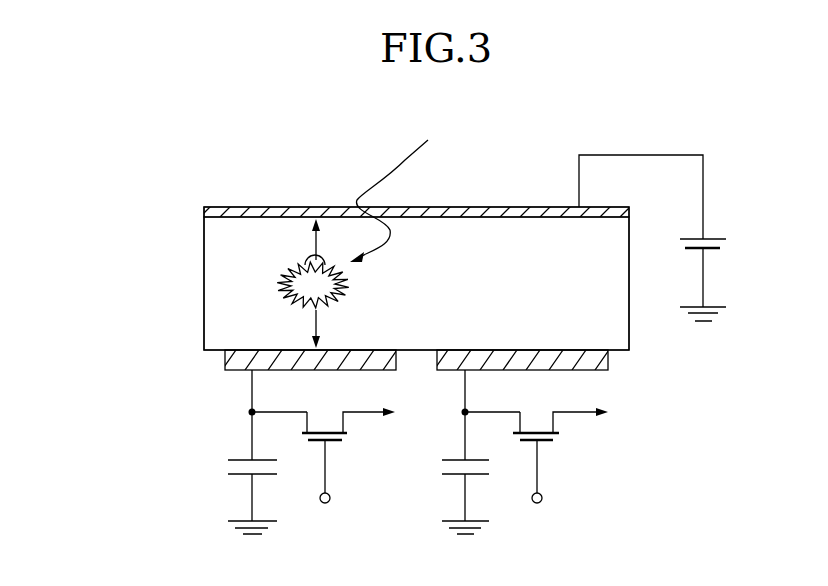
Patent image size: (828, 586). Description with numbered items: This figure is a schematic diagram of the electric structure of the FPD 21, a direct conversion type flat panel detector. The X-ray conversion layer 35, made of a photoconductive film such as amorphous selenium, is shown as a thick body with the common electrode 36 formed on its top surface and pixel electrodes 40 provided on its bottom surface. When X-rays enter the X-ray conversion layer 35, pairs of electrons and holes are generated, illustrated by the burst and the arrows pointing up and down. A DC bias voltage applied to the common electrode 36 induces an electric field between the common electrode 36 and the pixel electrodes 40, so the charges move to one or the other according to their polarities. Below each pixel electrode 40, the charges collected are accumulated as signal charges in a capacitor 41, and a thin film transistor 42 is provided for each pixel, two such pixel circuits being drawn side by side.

The FPD 21 is at (278, 200).
The X-ray conversion layer 35 is at (213, 278).
The common electrode 36 is at (525, 208).
The pixel electrode 40 is at (227, 368).
The capacitor 41 is at (230, 470).
The thin film transistor 42 is at (347, 439).